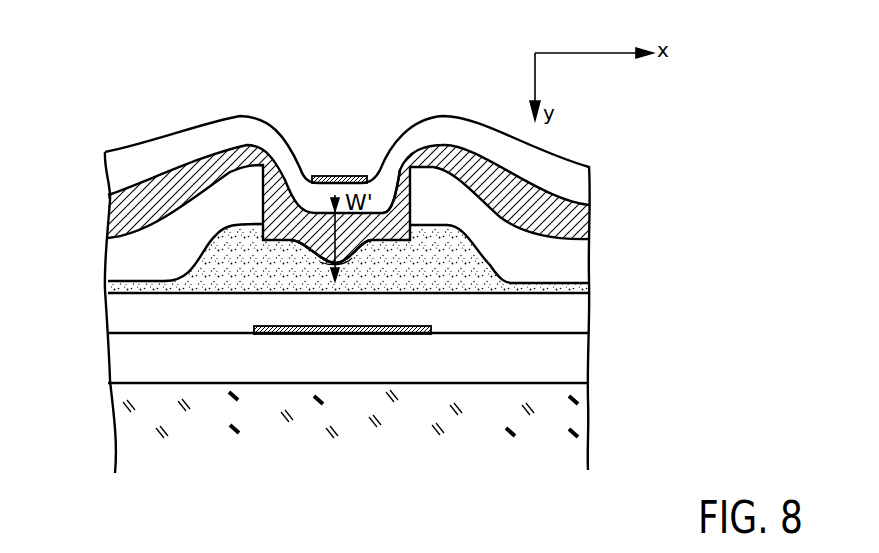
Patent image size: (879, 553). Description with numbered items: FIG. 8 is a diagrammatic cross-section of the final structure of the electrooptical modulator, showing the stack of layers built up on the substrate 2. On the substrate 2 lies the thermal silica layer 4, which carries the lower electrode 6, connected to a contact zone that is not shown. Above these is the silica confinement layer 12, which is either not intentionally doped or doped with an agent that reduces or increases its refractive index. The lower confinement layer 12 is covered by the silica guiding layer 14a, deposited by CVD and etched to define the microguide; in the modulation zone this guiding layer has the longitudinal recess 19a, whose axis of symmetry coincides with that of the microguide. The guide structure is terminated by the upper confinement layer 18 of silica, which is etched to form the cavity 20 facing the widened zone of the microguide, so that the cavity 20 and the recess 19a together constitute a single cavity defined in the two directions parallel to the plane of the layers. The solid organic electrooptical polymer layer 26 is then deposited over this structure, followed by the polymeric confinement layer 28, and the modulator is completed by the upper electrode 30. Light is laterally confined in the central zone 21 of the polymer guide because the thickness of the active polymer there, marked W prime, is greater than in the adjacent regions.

The substrate 2 is at (550, 437).
The thermal silica layer 4 is at (568, 363).
The lower electrode 6 is at (270, 326).
The silica confinement layer 12 is at (568, 320).
The silica guiding layer 14a is at (108, 287).
The upper confinement layer 18 is at (573, 262).
The longitudinal recess 19a is at (345, 252).
The cavity 20 is at (394, 170).
The central zone 21 is at (330, 262).
The electrooptical polymer layer 26 is at (575, 222).
The polymeric confinement layer 28 is at (577, 180).
The upper electrode 30 is at (332, 176).